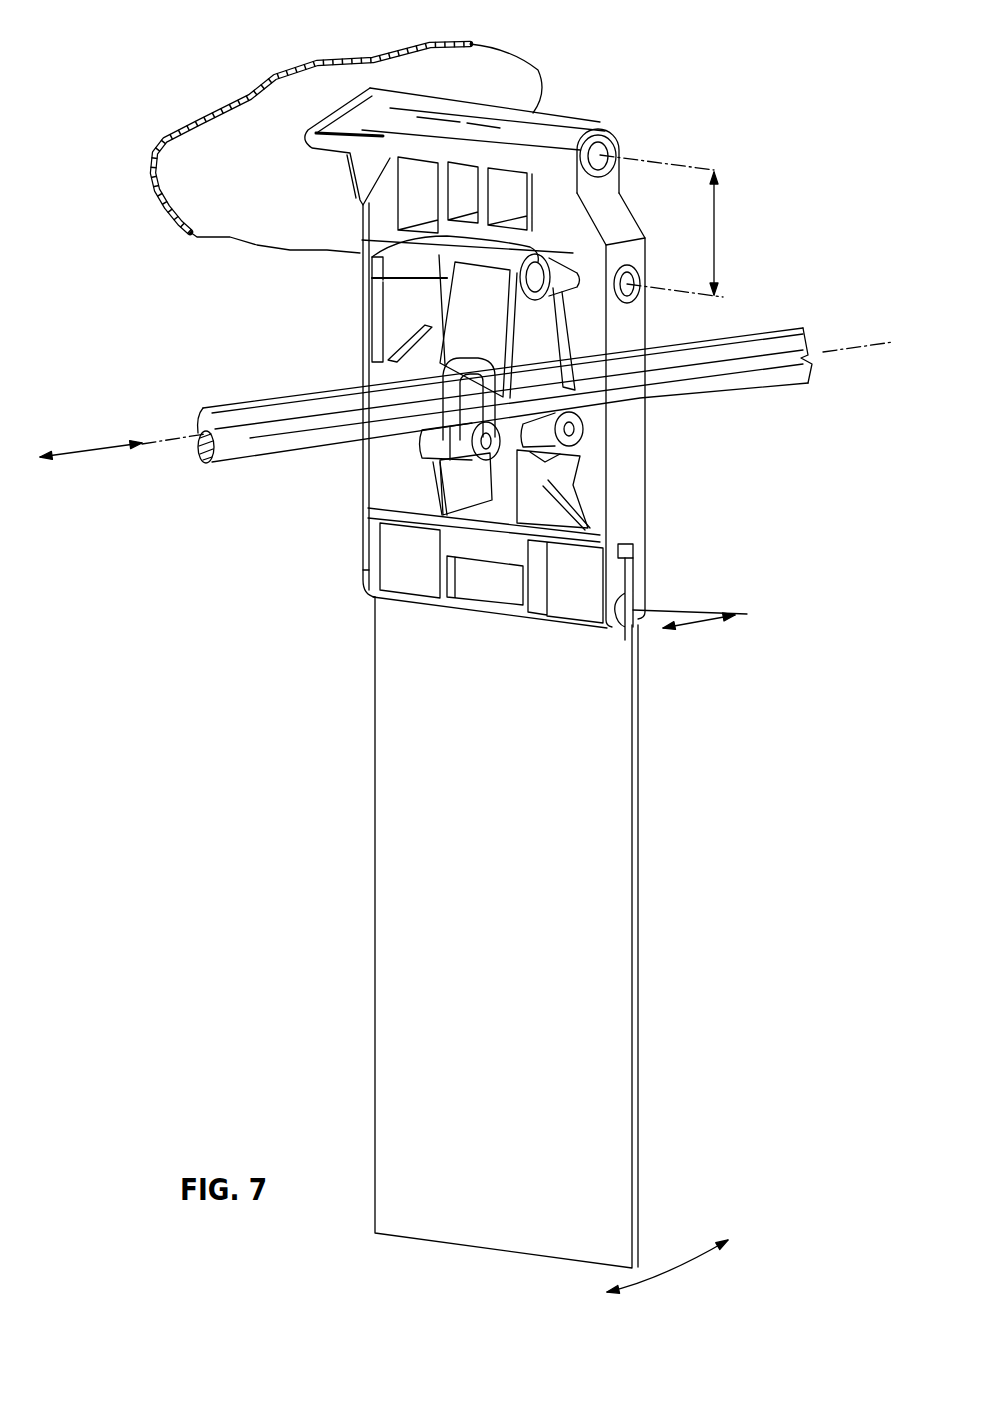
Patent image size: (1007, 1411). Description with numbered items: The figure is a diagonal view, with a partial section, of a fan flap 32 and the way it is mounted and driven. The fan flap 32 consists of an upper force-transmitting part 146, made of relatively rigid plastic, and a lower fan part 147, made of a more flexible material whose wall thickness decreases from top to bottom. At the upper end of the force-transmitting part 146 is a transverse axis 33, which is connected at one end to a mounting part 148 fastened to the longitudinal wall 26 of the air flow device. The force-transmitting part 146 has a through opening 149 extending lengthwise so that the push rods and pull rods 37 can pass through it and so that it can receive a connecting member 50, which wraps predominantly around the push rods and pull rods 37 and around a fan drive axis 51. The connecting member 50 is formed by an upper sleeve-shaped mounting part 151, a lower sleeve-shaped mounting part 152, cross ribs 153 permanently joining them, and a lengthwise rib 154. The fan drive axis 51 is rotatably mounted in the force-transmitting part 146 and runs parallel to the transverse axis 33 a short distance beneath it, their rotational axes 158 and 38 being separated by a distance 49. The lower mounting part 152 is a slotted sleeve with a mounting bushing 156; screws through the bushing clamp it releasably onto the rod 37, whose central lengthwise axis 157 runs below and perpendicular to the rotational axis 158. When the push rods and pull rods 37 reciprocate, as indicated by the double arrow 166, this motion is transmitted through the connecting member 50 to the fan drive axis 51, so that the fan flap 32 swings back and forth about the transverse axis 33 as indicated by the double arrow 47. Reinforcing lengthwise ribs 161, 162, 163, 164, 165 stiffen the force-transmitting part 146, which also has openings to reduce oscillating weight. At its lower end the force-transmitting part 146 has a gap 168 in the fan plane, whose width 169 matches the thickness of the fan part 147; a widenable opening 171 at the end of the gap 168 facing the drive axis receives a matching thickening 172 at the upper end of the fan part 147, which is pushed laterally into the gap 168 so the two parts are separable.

The longitudinal wall 26 is at (182, 177).
The fan flap 32 is at (352, 657).
The transverse axis 33 is at (598, 147).
The push rods and pull rods 37 is at (770, 347).
The rotational axis 38 is at (673, 165).
The double arrow 47 is at (653, 1280).
The distance 49 is at (718, 215).
The connecting member 50 is at (365, 312).
The fan drive axis 51 is at (630, 278).
The force-transmitting part 146 is at (627, 477).
The fan part 147 is at (612, 895).
The mounting part 148 is at (370, 88).
The through opening 149 is at (383, 525).
The upper sleeve-shaped mounting part 151 is at (372, 257).
The lower sleeve-shaped mounting part 152 is at (600, 395).
The cross ribs 153 is at (467, 328).
The lengthwise rib 154 is at (683, 362).
The mounting bushing 156 is at (425, 452).
The central lengthwise axis 157 is at (853, 347).
The rotational axis 158 is at (725, 295).
The reinforcing lengthwise rib 161 is at (368, 570).
The reinforcing lengthwise rib 162 is at (523, 617).
The reinforcing lengthwise rib 163 is at (366, 360).
The reinforcing lengthwise rib 164 is at (500, 490).
The reinforcing lengthwise rib 165 is at (527, 178).
The double arrow 166 is at (87, 450).
The gap 168 is at (618, 593).
The width 169 is at (680, 627).
The opening 171 is at (634, 546).
The thickening 172 is at (634, 562).